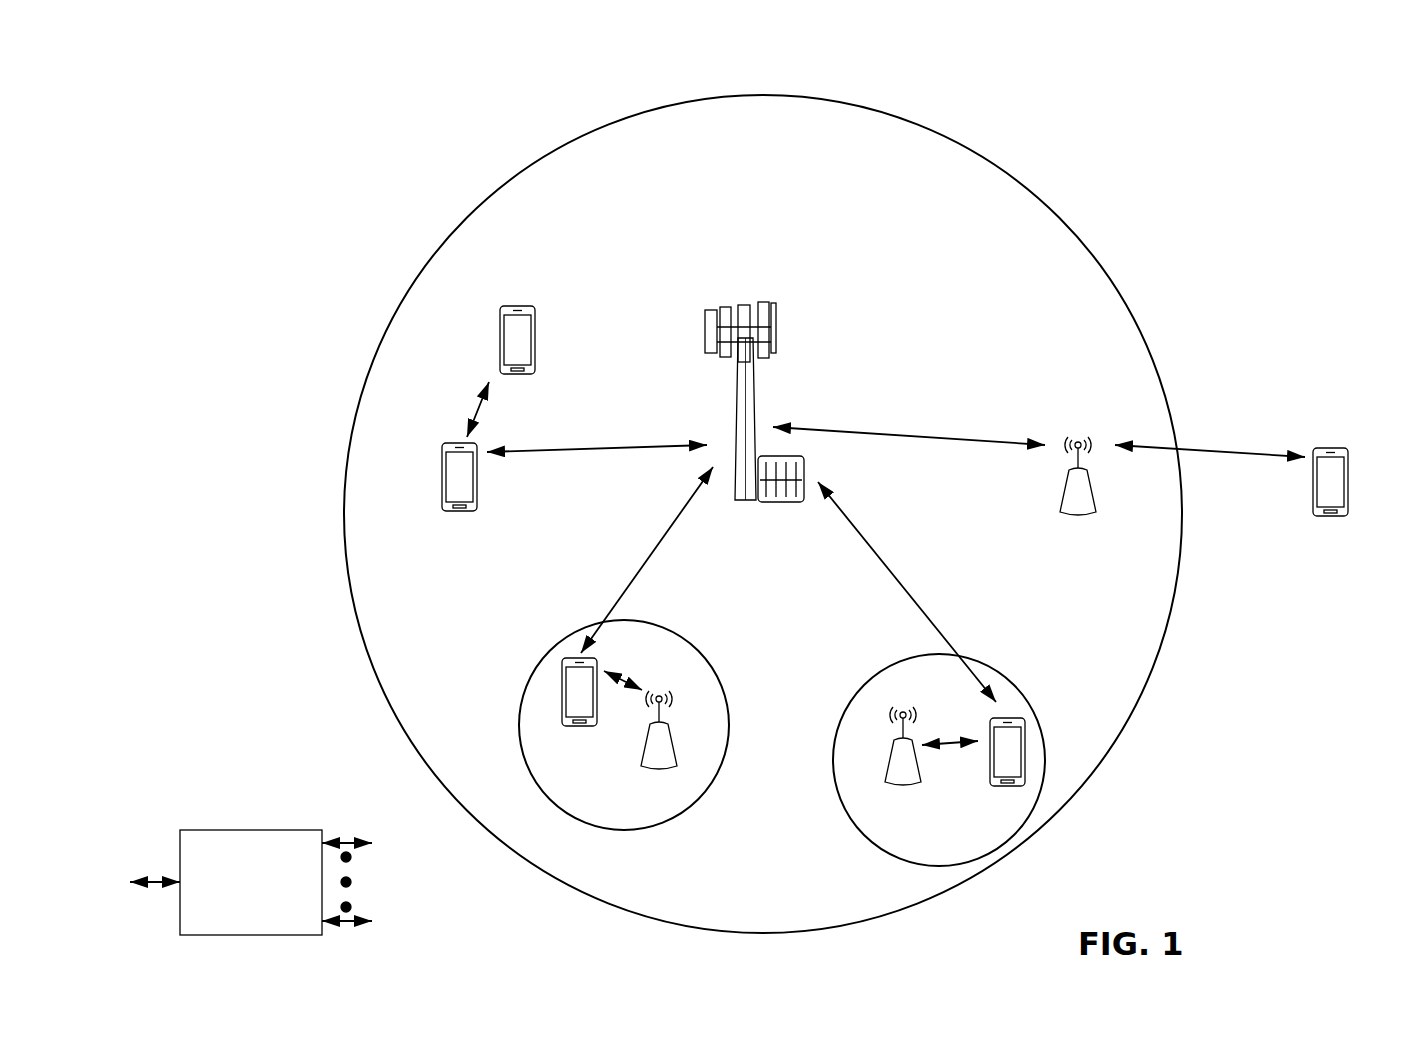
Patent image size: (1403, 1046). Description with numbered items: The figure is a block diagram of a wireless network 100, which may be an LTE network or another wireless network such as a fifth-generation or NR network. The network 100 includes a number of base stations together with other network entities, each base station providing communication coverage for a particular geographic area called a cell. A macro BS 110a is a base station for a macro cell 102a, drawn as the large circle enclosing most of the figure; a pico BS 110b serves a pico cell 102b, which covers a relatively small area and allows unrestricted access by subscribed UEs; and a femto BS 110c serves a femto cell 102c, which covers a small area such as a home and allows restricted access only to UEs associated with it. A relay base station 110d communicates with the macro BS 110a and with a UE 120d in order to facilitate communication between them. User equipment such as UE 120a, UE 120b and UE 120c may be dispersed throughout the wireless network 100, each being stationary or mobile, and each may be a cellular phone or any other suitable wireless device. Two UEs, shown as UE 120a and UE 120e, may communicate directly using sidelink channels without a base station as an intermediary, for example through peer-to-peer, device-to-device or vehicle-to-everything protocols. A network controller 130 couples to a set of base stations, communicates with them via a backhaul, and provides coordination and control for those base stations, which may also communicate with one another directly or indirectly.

The wireless network 100 is at (238, 66).
The macro cell 102a is at (1043, 200).
The pico cell 102b is at (716, 664).
The femto cell 102c is at (880, 672).
The macro BS 110a is at (750, 297).
The pico BS 110b is at (678, 757).
The femto BS 110c is at (887, 770).
The relay base station 110d is at (1078, 432).
The UE 120a is at (441, 475).
The UE 120b is at (565, 727).
The UE 120c is at (988, 787).
The UE 120d is at (1345, 448).
The UE 120e is at (500, 323).
The network controller 130 is at (250, 830).